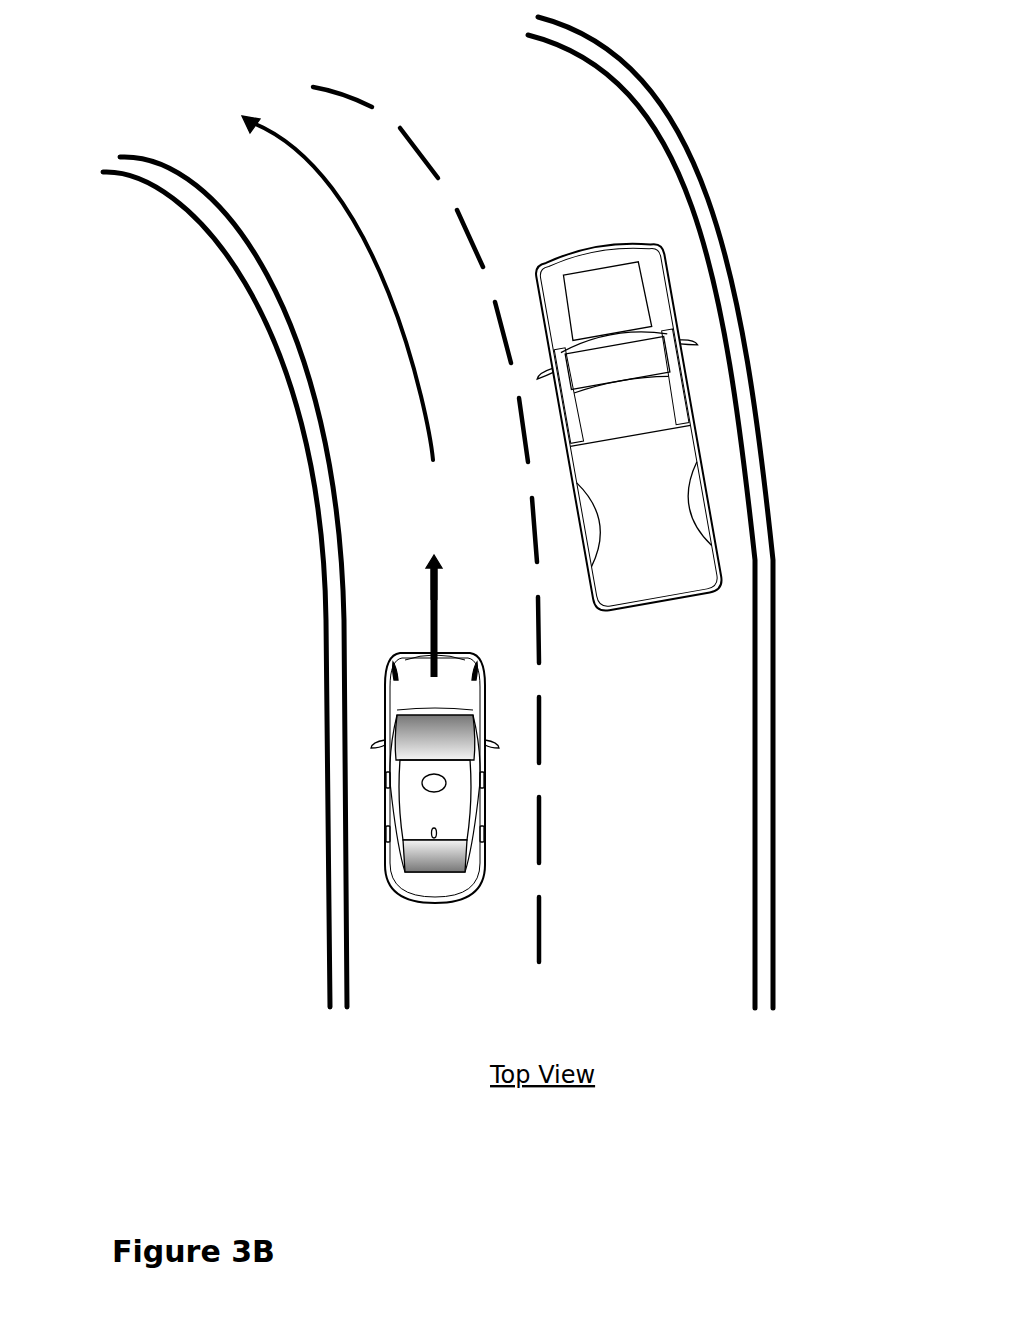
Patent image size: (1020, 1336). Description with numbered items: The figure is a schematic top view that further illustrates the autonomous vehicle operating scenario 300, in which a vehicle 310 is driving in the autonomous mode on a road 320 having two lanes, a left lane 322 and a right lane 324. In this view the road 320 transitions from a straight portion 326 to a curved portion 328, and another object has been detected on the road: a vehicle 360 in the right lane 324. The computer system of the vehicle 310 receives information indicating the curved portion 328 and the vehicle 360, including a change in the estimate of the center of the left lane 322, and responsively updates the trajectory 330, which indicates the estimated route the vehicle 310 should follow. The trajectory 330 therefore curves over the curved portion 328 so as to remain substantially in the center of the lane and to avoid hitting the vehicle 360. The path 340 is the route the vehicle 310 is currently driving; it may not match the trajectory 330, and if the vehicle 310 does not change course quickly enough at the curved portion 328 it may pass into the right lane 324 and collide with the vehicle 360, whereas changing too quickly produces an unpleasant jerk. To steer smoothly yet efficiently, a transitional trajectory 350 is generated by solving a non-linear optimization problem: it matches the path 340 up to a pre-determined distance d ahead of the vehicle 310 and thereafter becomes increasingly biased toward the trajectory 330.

The autonomous vehicle operating scenario 300 is at (477, 512).
The vehicle 310 is at (425, 746).
The road 320 is at (729, 764).
The left lane 322 is at (381, 532).
The right lane 324 is at (650, 192).
The straight portion 326 is at (381, 938).
The curved portion 328 is at (345, 452).
The trajectory 330 is at (393, 305).
The path 340 is at (430, 642).
The transitional trajectory 350 is at (470, 598).
The vehicle 360 is at (657, 443).